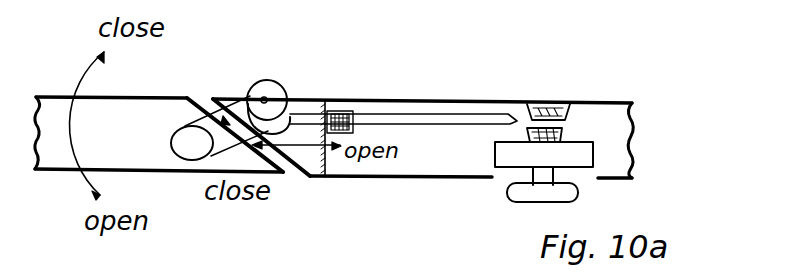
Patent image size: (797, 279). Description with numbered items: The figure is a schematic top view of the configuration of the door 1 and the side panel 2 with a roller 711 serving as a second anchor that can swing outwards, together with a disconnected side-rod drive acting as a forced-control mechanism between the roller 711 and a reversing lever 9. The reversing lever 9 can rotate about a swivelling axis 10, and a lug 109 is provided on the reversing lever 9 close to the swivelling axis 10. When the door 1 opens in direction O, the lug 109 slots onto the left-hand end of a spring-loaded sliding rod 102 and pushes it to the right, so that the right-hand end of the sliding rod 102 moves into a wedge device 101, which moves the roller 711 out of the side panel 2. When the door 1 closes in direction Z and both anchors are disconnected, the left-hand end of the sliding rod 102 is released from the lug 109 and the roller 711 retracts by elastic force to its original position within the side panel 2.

The door 1 is at (77, 102).
The side panel 2 is at (610, 122).
The reversing lever 9 is at (215, 102).
The swivelling axis 10 is at (263, 97).
The wedge device 101 is at (567, 112).
The sliding rod 102 is at (507, 120).
The lug 109 is at (289, 129).
The roller 711 is at (557, 155).